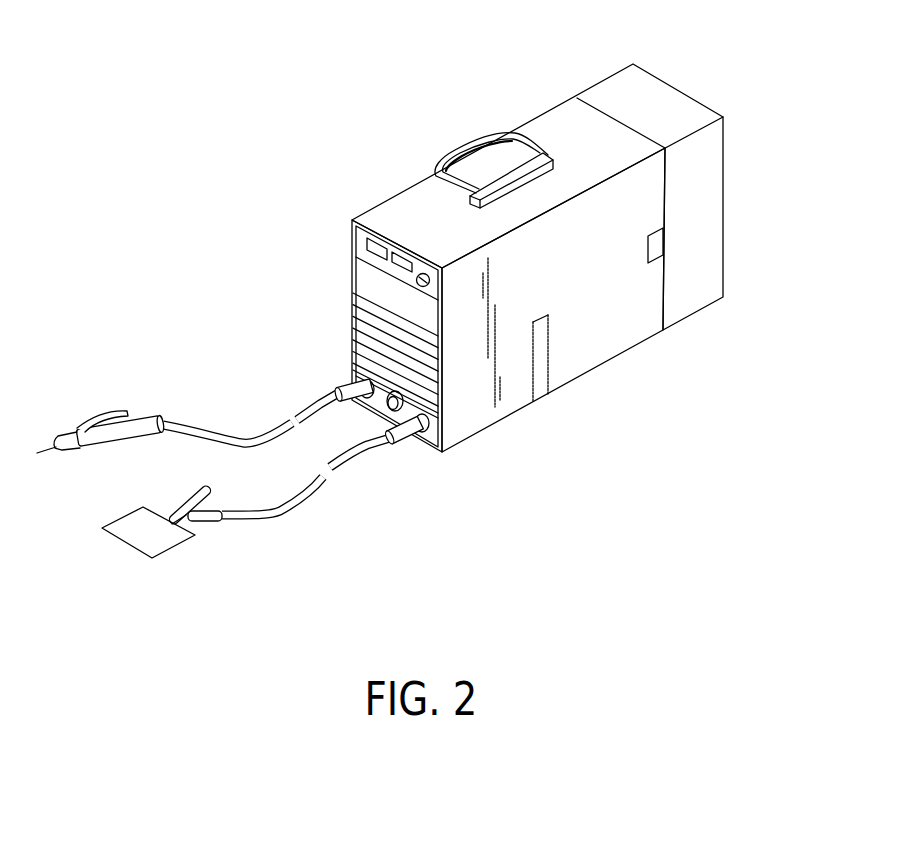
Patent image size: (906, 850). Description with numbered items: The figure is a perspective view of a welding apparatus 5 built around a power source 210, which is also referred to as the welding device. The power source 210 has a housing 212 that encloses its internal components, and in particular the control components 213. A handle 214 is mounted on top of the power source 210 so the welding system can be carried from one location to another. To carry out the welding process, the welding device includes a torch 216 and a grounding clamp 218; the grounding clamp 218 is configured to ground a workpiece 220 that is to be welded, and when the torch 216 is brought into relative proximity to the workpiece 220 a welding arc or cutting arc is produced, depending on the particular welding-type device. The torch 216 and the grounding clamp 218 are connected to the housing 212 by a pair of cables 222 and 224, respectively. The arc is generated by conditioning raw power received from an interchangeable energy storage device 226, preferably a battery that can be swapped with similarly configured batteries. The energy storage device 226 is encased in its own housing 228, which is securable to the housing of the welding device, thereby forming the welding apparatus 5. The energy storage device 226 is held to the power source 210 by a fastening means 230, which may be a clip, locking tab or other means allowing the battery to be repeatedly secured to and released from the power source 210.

The welding apparatus 5 is at (382, 67).
The power source 210 is at (333, 167).
The housing 212 is at (561, 274).
The control components 213 is at (552, 355).
The handle 214 is at (482, 133).
The torch 216 is at (142, 418).
The grounding clamp 218 is at (202, 493).
The workpiece 220 is at (130, 535).
The cable 222 is at (218, 432).
The cable 224 is at (278, 515).
The energy storage device 226 is at (698, 70).
The housing 228 is at (673, 214).
The fastening means 230 is at (647, 250).